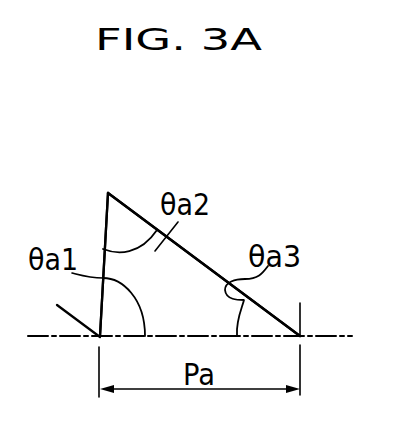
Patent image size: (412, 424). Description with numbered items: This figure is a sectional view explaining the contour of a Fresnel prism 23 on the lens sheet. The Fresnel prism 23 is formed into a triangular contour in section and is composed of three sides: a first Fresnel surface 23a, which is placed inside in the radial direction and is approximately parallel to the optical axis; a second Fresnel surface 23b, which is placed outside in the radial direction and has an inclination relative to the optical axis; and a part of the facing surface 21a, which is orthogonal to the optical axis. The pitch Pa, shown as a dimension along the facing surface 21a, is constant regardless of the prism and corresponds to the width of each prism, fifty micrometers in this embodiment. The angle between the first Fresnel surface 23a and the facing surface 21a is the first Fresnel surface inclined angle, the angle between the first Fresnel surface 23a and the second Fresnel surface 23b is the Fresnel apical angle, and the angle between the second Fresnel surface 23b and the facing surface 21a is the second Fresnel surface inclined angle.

The Fresnel prism 23 is at (118, 206).
The first Fresnel surface 23a is at (104, 232).
The second Fresnel surface 23b is at (187, 251).
The facing surface 21a is at (310, 336).